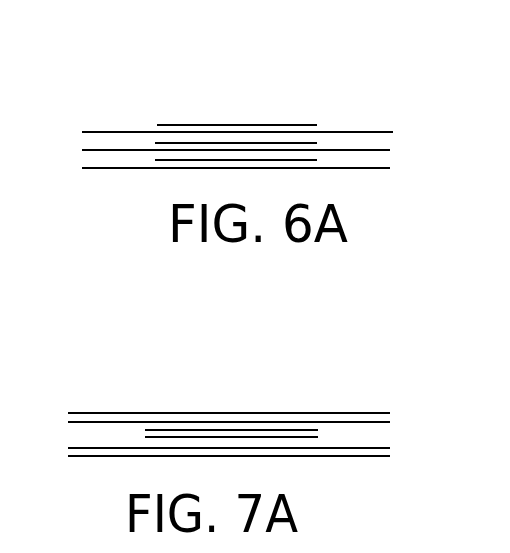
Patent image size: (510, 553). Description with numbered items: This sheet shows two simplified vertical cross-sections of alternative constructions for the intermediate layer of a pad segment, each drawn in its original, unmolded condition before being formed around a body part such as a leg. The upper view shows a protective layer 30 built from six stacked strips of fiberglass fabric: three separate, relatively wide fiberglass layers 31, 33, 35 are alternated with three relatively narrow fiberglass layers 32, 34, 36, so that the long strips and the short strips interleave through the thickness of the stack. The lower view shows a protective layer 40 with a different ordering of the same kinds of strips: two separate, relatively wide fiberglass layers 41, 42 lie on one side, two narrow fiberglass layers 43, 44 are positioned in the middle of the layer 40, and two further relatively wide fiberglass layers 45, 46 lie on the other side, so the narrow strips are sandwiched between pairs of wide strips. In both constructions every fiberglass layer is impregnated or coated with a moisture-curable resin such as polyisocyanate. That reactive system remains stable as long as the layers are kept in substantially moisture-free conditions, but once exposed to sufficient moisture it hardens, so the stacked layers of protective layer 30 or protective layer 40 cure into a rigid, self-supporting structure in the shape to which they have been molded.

In FIG. 6A, the protective layer 30 is at (256, 91).
In FIG. 6A, the relatively wide fiberglass layer 31 is at (355, 132).
In FIG. 6A, the relatively narrow fiberglass layer 32 is at (175, 125).
In FIG. 6A, the relatively wide fiberglass layer 33 is at (388, 150).
In FIG. 6A, the relatively narrow fiberglass layer 34 is at (215, 143).
In FIG. 6A, the relatively wide fiberglass layer 35 is at (385, 168).
In FIG. 6A, the relatively narrow fiberglass layer 36 is at (267, 160).
In FIG. 7A, the protective layer 40 is at (235, 409).
In FIG. 7A, the relatively wide fiberglass layer 41 is at (150, 413).
In FIG. 7A, the relatively wide fiberglass layer 42 is at (203, 422).
In FIG. 7A, the narrow fiberglass layer 43 is at (260, 430).
In FIG. 7A, the narrow fiberglass layer 44 is at (307, 437).
In FIG. 7A, the relatively wide fiberglass layer 45 is at (325, 448).
In FIG. 7A, the relatively wide fiberglass layer 46 is at (372, 457).